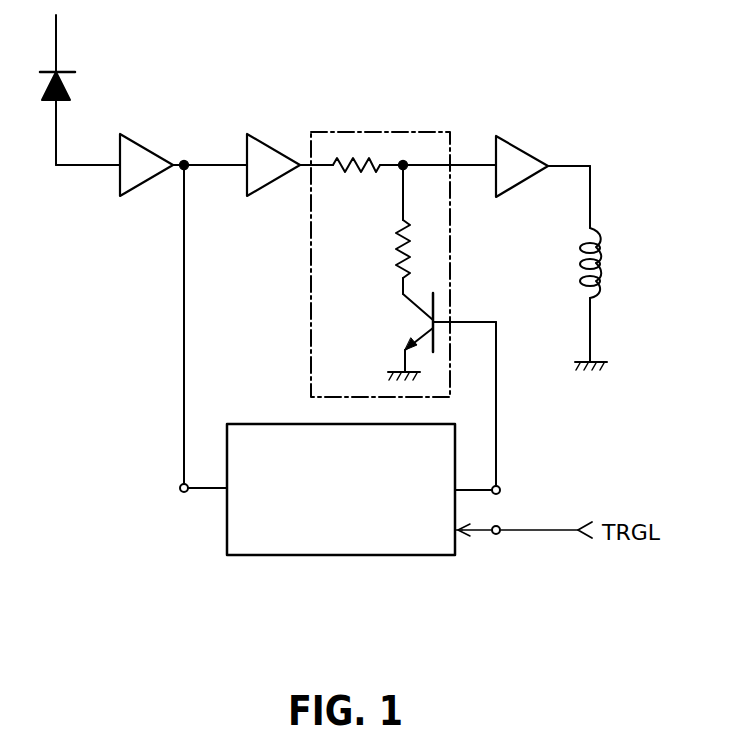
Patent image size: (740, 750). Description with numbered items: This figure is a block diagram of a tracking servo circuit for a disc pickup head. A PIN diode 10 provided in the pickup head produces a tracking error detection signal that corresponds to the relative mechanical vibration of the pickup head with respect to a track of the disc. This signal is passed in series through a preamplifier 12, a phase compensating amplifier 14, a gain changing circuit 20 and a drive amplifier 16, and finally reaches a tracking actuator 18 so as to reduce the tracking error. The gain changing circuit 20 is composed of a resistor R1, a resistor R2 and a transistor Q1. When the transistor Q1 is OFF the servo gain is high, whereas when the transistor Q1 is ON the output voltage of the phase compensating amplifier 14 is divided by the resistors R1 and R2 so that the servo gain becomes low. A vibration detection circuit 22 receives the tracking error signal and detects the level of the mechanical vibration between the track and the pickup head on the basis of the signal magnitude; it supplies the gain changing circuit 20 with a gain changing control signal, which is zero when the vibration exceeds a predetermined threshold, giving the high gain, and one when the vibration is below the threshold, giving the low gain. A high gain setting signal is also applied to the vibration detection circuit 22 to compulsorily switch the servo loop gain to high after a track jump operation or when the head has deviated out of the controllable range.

The PIN diode 10 is at (67, 87).
The preamplifier 12 is at (145, 144).
The phase compensating amplifier 14 is at (272, 142).
The drive amplifier 16 is at (530, 150).
The tracking actuator 18 is at (602, 230).
The gain changing circuit 20 is at (378, 128).
The vibration detection circuit 22 is at (372, 557).
The resistor R1 is at (353, 160).
The resistor R2 is at (417, 247).
The transistor Q1 is at (437, 310).